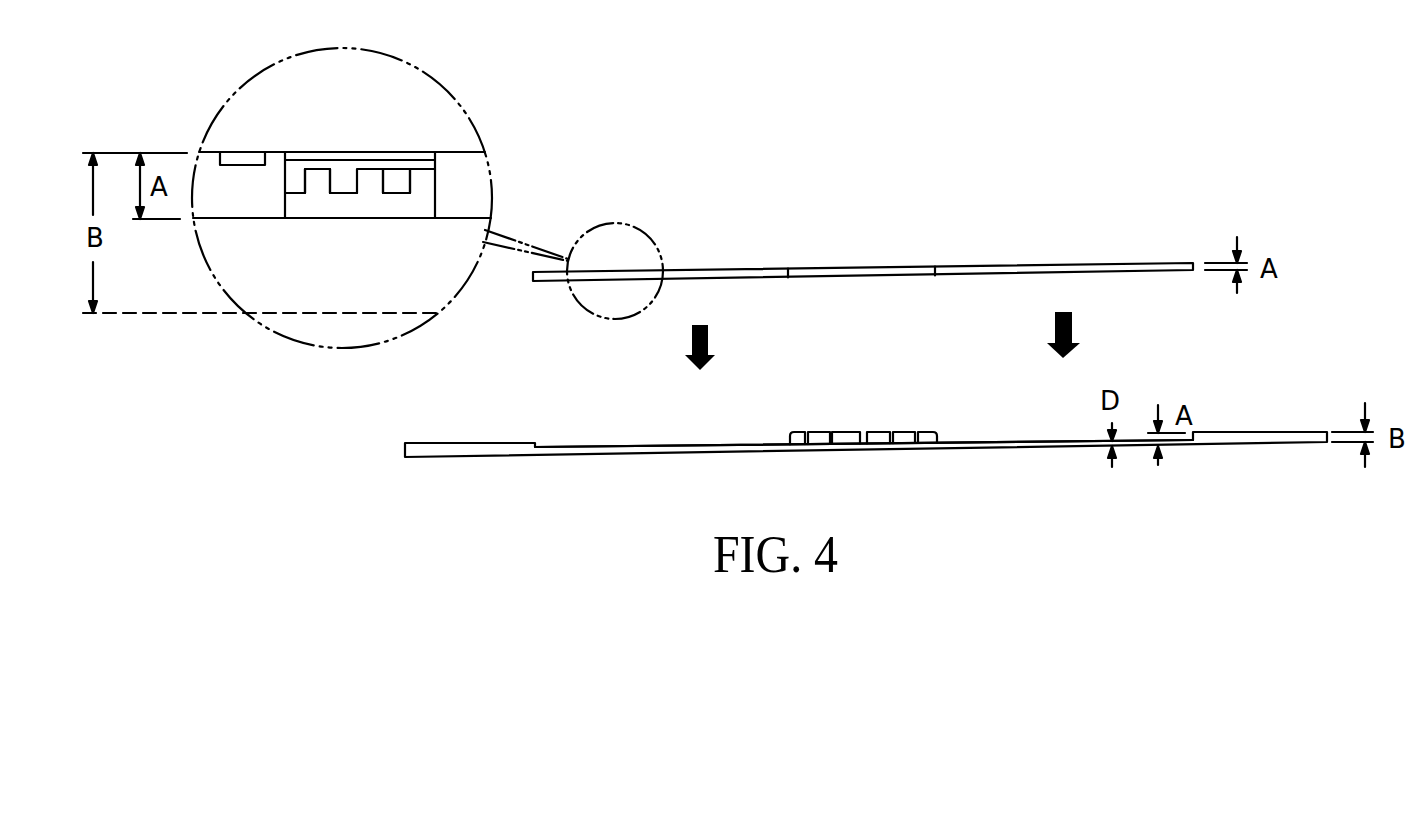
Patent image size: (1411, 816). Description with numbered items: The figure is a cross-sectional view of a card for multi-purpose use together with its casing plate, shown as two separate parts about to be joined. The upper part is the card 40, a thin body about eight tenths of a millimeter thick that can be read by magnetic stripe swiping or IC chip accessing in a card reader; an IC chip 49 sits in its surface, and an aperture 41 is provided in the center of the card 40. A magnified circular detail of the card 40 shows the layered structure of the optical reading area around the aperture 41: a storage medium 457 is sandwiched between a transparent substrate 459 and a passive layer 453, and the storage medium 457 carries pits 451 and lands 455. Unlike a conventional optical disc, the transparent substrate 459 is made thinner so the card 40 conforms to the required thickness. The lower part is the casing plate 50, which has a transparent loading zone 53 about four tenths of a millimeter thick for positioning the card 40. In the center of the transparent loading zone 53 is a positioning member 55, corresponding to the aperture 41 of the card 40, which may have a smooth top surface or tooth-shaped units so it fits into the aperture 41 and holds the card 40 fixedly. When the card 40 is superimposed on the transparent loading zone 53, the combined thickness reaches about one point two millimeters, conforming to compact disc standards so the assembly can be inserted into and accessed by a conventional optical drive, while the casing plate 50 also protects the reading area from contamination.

The card 40 is at (458, 158).
The aperture 41 is at (865, 268).
The IC chip 49 is at (240, 157).
The casing plate 50 is at (473, 446).
The transparent loading zone 53 is at (618, 442).
The positioning member 55 is at (886, 420).
The pits 451 is at (318, 182).
The passive layer 453 is at (350, 155).
The lands 455 is at (398, 193).
The storage medium 457 is at (427, 189).
The transparent substrate 459 is at (338, 210).